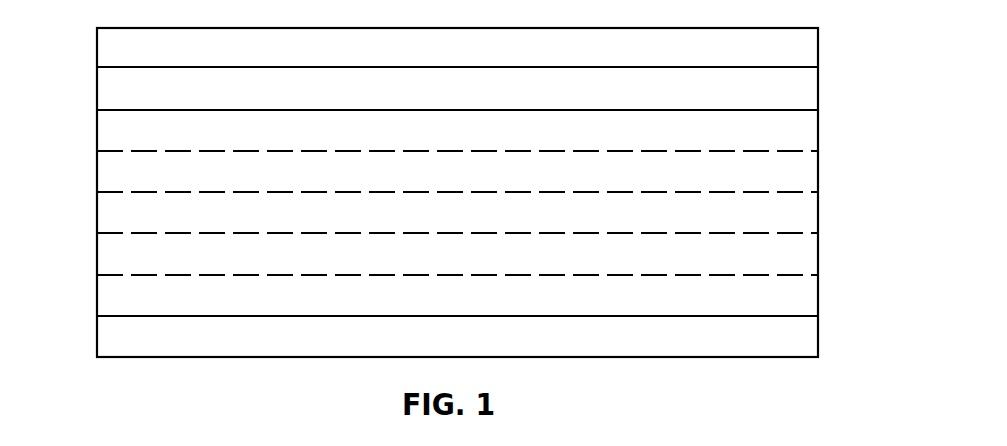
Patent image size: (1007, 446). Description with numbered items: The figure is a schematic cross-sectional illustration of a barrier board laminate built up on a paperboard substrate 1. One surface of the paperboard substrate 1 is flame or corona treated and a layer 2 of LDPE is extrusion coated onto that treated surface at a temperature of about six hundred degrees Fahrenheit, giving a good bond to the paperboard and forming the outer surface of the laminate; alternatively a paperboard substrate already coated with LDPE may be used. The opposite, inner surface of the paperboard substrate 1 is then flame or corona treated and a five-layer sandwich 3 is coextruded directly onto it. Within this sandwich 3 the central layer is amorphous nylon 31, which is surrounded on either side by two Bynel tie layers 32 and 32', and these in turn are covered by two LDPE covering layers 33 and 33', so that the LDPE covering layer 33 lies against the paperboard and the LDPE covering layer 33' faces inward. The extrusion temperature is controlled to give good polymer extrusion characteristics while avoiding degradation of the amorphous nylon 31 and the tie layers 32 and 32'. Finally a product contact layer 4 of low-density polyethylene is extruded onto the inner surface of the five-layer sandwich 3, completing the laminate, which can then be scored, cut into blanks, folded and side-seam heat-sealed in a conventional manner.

The paperboard substrate 1 is at (107, 95).
The layer of LDPE 2 is at (107, 54).
The five-layer sandwich 3 is at (461, 213).
The product contact layer 4 is at (106, 330).
The LDPE covering layer 33 is at (491, 129).
The tie layer 32 is at (491, 170).
The amorphous nylon 31 is at (797, 215).
The tie layer 32' is at (495, 260).
The LDPE covering layer 33' is at (495, 300).